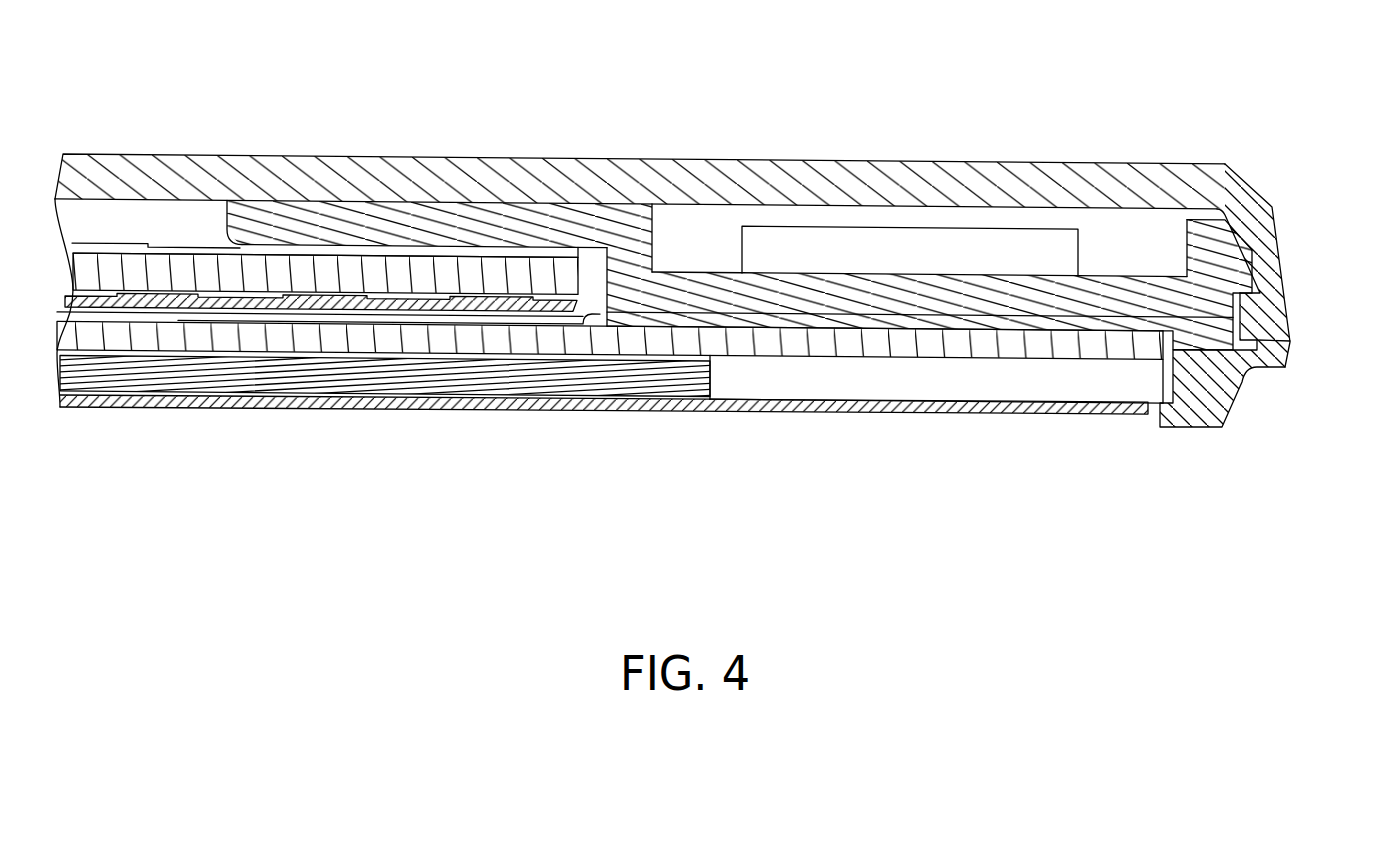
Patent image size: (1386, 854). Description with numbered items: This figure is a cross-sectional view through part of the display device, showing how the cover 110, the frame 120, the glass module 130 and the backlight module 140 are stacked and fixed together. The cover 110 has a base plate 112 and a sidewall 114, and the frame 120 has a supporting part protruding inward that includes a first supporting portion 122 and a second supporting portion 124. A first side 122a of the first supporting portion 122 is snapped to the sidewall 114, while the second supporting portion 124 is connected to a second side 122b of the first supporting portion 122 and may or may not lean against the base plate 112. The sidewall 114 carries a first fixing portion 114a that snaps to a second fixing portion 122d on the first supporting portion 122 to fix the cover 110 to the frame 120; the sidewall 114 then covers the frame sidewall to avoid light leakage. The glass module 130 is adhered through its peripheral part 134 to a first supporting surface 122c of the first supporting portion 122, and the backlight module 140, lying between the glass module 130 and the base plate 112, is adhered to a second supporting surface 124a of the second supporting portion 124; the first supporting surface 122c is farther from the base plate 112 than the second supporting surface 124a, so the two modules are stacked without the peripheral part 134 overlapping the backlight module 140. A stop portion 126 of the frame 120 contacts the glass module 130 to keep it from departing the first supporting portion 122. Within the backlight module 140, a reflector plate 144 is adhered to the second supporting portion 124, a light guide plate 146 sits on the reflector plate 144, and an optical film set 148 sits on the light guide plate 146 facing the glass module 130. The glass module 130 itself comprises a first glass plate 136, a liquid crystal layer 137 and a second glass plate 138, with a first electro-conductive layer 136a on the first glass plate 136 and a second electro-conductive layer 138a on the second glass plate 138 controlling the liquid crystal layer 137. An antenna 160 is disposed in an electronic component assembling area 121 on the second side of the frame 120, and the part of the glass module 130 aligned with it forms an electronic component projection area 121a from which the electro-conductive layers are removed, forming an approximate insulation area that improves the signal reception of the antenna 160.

The cover 110 is at (907, 146).
The base plate 112 is at (1020, 187).
The sidewall 114 is at (1275, 248).
The first fixing portion 114a is at (1260, 323).
The frame 120 is at (940, 292).
The electronic component assembling area 121 is at (1050, 263).
The electronic component projection area 121a is at (775, 377).
The first supporting portion 122 is at (807, 290).
The first side 122a is at (1208, 298).
The second side 122b is at (653, 257).
The first supporting surface 122c is at (882, 346).
The second fixing portion 122d is at (1247, 272).
The second supporting portion 124 is at (503, 223).
The second supporting surface 124a is at (465, 250).
The stop portion 126 is at (1217, 392).
The glass module 130 is at (1082, 461).
The peripheral part 134 is at (866, 313).
The first glass plate 136 is at (955, 345).
The first electro-conductive layer 136a is at (398, 357).
The liquid crystal layer 137 is at (1010, 370).
The second glass plate 138 is at (1082, 417).
The second electro-conductive layer 138a is at (583, 393).
The backlight module 140 is at (158, 206).
The reflector plate 144 is at (430, 250).
The light guide plate 146 is at (375, 270).
The optical film set 148 is at (340, 298).
The antenna 160 is at (755, 240).